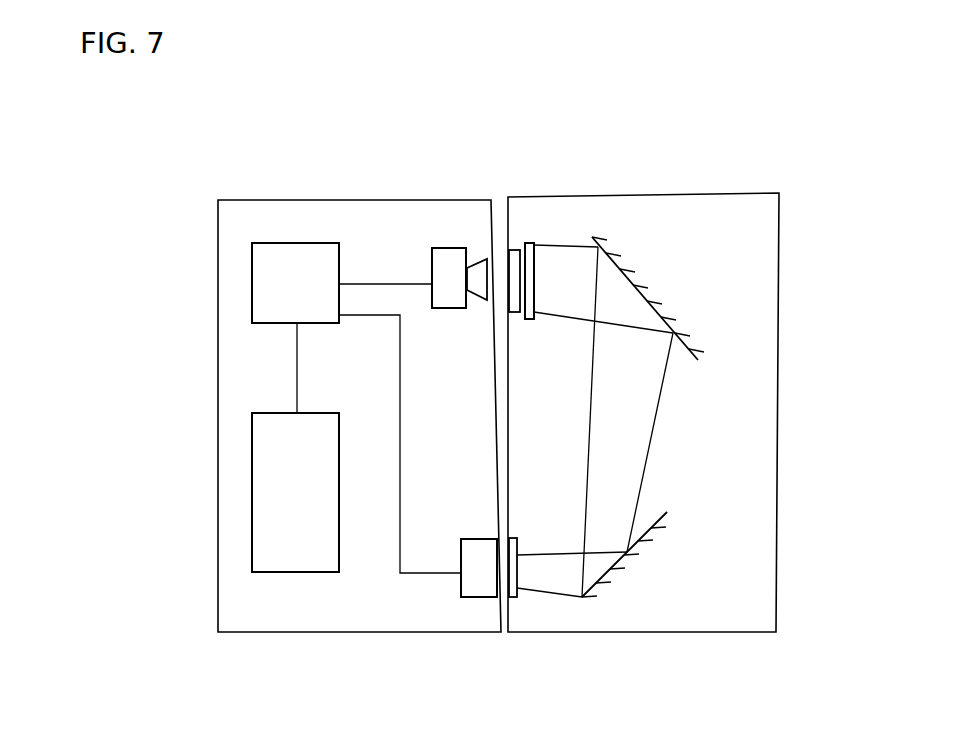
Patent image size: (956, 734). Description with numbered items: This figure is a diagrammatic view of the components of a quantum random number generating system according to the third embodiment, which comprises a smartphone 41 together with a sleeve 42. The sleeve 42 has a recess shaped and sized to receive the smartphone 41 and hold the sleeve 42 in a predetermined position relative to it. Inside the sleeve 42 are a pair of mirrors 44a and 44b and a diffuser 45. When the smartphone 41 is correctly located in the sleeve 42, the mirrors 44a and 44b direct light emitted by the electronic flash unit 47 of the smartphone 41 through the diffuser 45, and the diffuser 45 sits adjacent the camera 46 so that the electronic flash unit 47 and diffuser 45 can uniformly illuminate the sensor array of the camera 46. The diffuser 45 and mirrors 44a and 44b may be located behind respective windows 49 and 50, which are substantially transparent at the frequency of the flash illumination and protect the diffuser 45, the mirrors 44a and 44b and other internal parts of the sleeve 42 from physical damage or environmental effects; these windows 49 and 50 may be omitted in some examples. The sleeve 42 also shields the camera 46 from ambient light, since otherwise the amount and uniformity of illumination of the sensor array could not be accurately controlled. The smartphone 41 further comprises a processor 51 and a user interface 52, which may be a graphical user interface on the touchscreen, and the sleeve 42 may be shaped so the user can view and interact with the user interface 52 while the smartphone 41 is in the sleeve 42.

The smartphone 41 is at (243, 377).
The sleeve 42 is at (715, 483).
The mirror 44a is at (647, 548).
The mirror 44b is at (660, 298).
The diffuser 45 is at (535, 242).
The camera 46 is at (449, 270).
The electronic flash unit 47 is at (478, 572).
The window 49 is at (510, 598).
The window 50 is at (511, 250).
The processor 51 is at (265, 272).
The user interface 52 is at (280, 492).